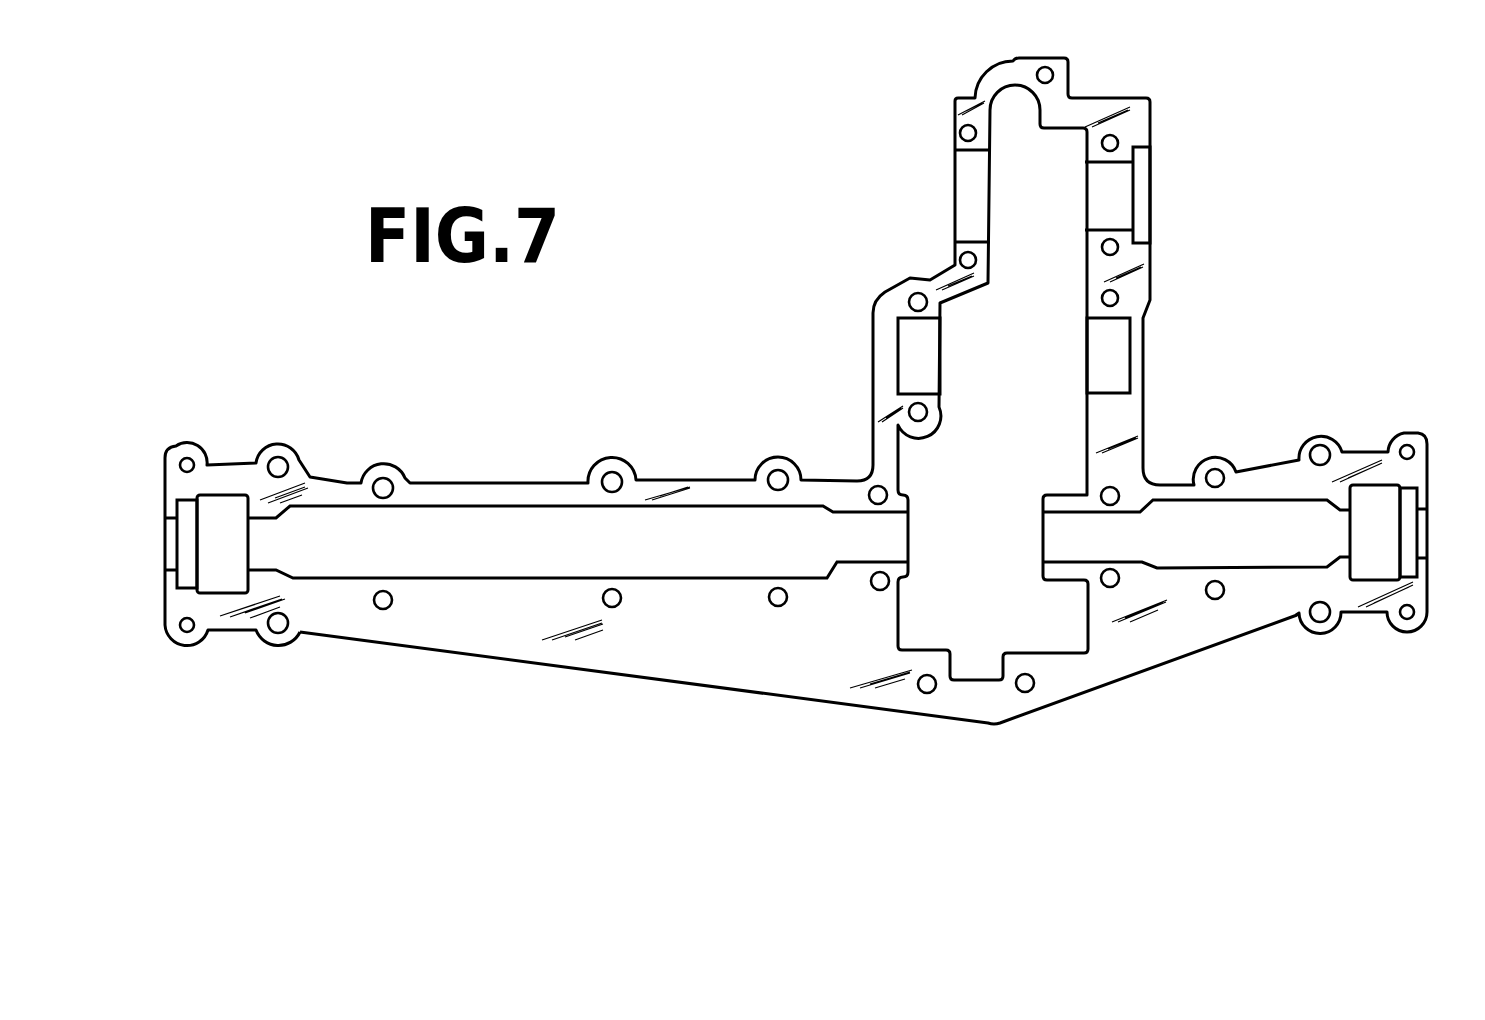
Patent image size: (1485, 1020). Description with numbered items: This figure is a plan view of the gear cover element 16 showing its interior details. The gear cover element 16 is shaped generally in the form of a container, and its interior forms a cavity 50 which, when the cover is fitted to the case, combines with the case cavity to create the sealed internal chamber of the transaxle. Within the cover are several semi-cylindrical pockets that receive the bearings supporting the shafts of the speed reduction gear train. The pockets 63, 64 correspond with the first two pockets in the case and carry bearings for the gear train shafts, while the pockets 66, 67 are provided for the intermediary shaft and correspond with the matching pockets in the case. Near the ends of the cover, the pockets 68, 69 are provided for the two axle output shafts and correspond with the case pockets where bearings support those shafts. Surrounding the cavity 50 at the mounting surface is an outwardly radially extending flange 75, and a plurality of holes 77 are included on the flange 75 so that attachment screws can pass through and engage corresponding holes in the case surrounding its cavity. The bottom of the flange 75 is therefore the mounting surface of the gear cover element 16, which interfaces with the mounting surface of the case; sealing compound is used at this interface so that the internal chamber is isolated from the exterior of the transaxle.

The gear cover element 16 is at (815, 132).
The cavity 50 is at (1040, 358).
The semi-cylindrical pocket 63 is at (977, 150).
The semi-cylindrical pocket 64 is at (1106, 228).
The pocket for intermediary shaft 66 is at (920, 395).
The pocket for intermediary shaft 67 is at (1107, 388).
The pocket for axle output shaft 68 is at (1376, 578).
The pocket for axle output shaft 69 is at (212, 587).
The flange 75 is at (806, 698).
The holes 77 is at (1107, 138).